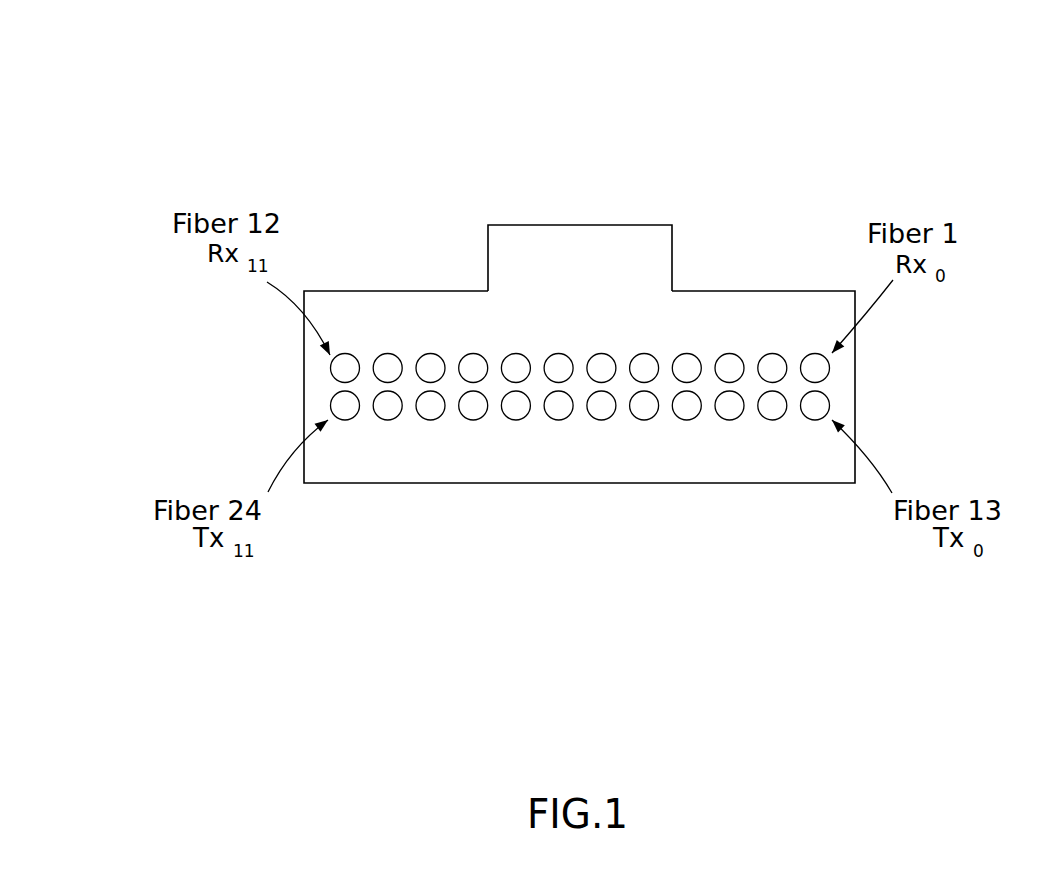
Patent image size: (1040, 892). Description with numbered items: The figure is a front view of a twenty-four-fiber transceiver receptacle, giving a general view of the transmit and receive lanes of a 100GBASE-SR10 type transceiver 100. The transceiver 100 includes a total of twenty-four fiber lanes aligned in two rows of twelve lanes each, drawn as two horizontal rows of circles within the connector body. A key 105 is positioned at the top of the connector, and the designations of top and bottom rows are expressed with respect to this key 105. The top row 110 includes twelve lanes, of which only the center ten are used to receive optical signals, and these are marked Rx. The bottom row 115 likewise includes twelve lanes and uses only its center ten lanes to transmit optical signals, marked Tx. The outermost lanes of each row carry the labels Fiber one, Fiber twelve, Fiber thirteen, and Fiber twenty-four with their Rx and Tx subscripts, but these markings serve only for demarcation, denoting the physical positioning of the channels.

The transceiver 100 is at (845, 112).
The key 105 is at (578, 224).
The top row 110 is at (301, 368).
The bottom row 115 is at (301, 406).